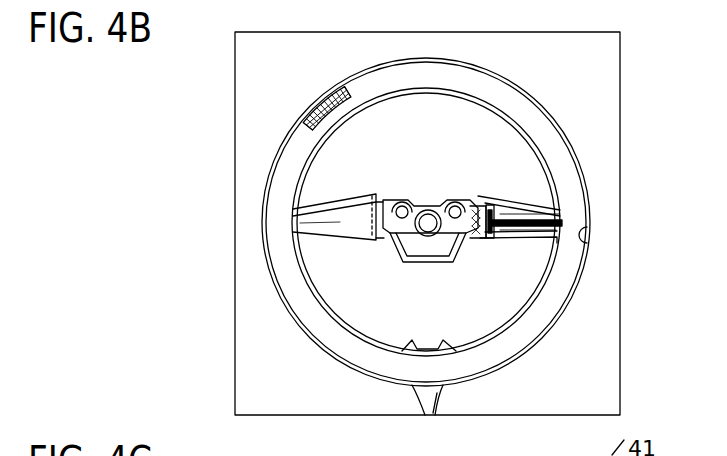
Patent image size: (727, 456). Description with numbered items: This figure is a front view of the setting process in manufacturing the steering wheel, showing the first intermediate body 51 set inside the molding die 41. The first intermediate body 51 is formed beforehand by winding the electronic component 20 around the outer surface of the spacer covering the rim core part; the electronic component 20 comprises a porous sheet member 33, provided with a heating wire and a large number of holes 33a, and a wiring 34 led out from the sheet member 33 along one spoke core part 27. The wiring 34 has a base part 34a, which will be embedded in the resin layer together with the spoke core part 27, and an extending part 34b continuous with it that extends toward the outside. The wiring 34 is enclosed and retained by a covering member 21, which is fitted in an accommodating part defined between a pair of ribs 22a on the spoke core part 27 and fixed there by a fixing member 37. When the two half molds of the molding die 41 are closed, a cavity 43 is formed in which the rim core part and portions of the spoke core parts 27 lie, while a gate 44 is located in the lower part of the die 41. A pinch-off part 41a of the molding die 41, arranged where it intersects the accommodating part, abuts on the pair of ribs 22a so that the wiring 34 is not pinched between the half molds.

The electronic component 20 is at (276, 155).
The covering member 21 is at (484, 242).
The ribs 22a is at (478, 210).
The spoke core part 27 is at (517, 236).
The sheet member 33 is at (322, 96).
The holes 33a is at (310, 116).
The wiring 34 is at (518, 236).
The base part 34a is at (524, 215).
The extending part 34b is at (474, 206).
The fixing member 37 is at (493, 206).
The molding die 41 is at (611, 27).
The pinch-off part 41a is at (498, 246).
The cavity 43 is at (590, 227).
The gate 44 is at (430, 399).
The first intermediate body 51 is at (580, 158).